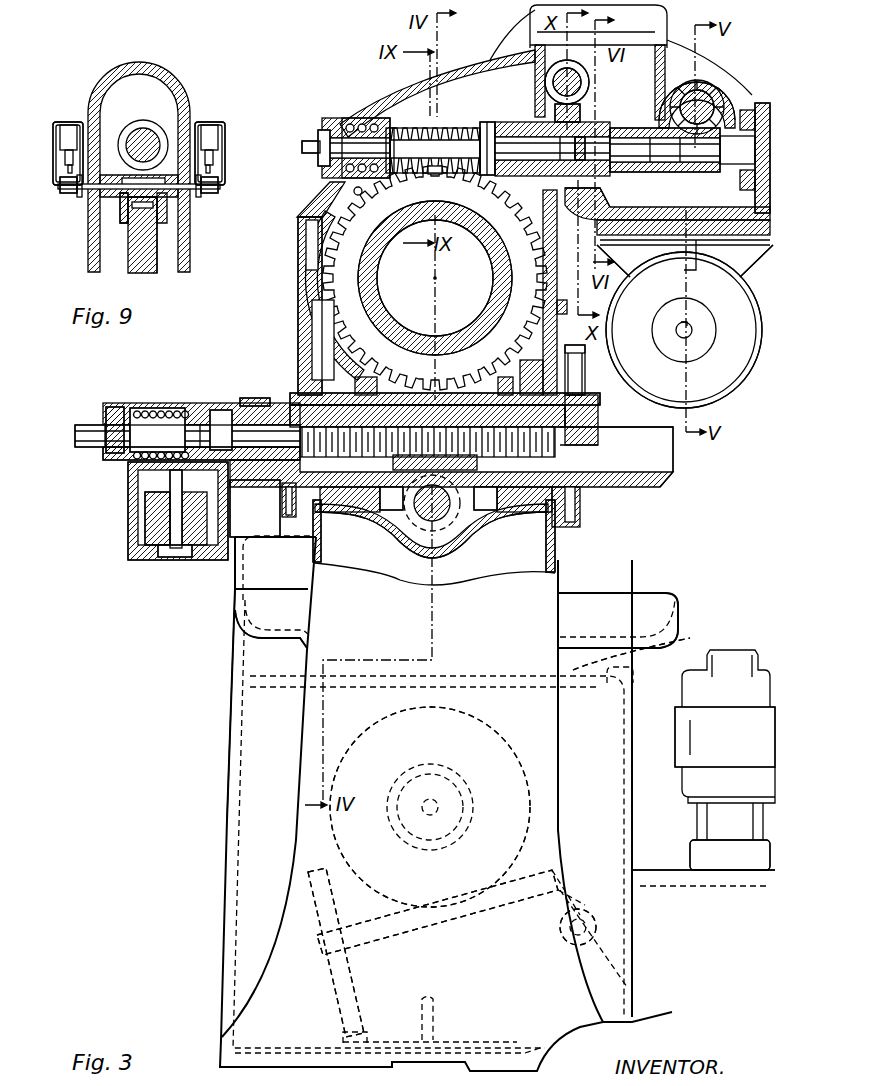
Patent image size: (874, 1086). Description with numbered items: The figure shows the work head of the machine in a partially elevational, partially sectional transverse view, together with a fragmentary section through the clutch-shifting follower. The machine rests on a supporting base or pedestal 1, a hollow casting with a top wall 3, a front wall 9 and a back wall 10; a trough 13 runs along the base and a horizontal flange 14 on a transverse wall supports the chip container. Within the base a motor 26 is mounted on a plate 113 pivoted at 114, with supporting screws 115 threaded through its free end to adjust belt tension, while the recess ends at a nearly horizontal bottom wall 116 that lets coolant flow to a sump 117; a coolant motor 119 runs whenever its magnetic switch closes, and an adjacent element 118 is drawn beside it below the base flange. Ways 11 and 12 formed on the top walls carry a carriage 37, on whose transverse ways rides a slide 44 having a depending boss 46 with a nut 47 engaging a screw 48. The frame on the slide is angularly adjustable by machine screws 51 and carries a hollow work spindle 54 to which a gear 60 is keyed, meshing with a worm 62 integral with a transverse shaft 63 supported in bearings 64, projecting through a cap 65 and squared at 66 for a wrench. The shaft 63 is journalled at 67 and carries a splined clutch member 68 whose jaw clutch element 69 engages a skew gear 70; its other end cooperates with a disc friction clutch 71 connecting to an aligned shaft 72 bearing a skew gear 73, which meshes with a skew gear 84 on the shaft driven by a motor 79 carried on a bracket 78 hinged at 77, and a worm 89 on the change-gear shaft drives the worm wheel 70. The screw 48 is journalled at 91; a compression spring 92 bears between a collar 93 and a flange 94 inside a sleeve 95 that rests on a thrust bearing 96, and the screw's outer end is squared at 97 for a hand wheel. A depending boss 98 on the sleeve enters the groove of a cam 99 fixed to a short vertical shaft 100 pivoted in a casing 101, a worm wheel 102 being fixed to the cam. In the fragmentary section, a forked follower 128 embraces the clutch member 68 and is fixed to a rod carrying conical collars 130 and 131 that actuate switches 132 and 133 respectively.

In FIG. 3, the supporting base or pedestal 1 is at (236, 826).
In FIG. 3, the top wall 3 is at (470, 540).
In FIG. 3, the front wall 9 is at (230, 750).
In FIG. 3, the back wall 10 is at (626, 782).
In FIG. 3, the longitudinally extending way 11 is at (325, 512).
In FIG. 3, the longitudinally extending way 12 is at (500, 522).
In FIG. 3, the trough 13 is at (255, 603).
In FIG. 3, the horizontal flange 14 is at (662, 648).
In FIG. 3, the motor 26 is at (515, 752).
In FIG. 3, the carriage 37 is at (650, 490).
In FIG. 3, the transversely movable slide 44 is at (318, 328).
In FIG. 3, the depending boss 46 is at (478, 520).
In FIG. 3, the nut 47 is at (388, 520).
In FIG. 3, the screw 48 is at (323, 430).
In FIG. 3, the machine screws 51 is at (575, 352).
In FIG. 3, the hollow work spindle 54 is at (476, 328).
In FIG. 9, the gear 60 is at (133, 262).
In FIG. 3, the gear 60 is at (348, 250).
In FIG. 3, the worm 62 is at (440, 130).
In FIG. 3, the transversely extending shaft 63 is at (392, 136).
In FIG. 3, the bearings 64 is at (354, 118).
In FIG. 3, the cap 65 is at (327, 128).
In FIG. 3, the squared end 66 is at (306, 138).
In FIG. 3, the journal 67 is at (490, 124).
In FIG. 3, the clutch member 68 is at (616, 134).
In FIG. 3, the jaw clutch element 69 is at (592, 120).
In FIG. 3, the skew gear 70 is at (580, 80).
In FIG. 3, the disc friction clutch 71 is at (620, 176).
In FIG. 3, the shaft 72 is at (750, 112).
In FIG. 3, the skew gear 73 is at (697, 107).
In FIG. 3, the hinge 77 is at (576, 190).
In FIG. 3, the bracket 78 is at (758, 250).
In FIG. 3, the motor 79 is at (741, 376).
In FIG. 3, the skew gear 84 is at (722, 92).
In FIG. 3, the worm 89 is at (561, 66).
In FIG. 3, the journal 91 is at (262, 398).
In FIG. 3, the compression spring 92 is at (134, 408).
In FIG. 3, the collar 93 is at (126, 460).
In FIG. 3, the flange 94 is at (210, 410).
In FIG. 3, the sleeve 95 is at (176, 408).
In FIG. 3, the thrust bearing 96 is at (236, 404).
In FIG. 3, the squared outer end 97 is at (82, 430).
In FIG. 3, the depending boss 98 is at (229, 497).
In FIG. 3, the cam 99 is at (140, 495).
In FIG. 3, the short vertical shaft 100 is at (176, 556).
In FIG. 3, the casing 101 is at (130, 535).
In FIG. 3, the worm wheel 102 is at (140, 512).
In FIG. 3, the plate 113 is at (405, 962).
In FIG. 3, the pivot 114 is at (581, 910).
In FIG. 3, the supporting screws 115 is at (335, 1024).
In FIG. 3, the bottom wall 116 is at (630, 665).
In FIG. 3, the sump 117 is at (688, 878).
In FIG. 3, the motor base 118 is at (735, 874).
In FIG. 3, the motor 119 is at (725, 737).
In FIG. 9, the forked follower 128 is at (124, 216).
In FIG. 3, the forked follower 128 is at (352, 192).
In FIG. 9, the conical collar 130 is at (75, 193).
In FIG. 9, the conical collar 131 is at (204, 193).
In FIG. 9, the switch 132 is at (62, 144).
In FIG. 9, the switch 133 is at (216, 140).